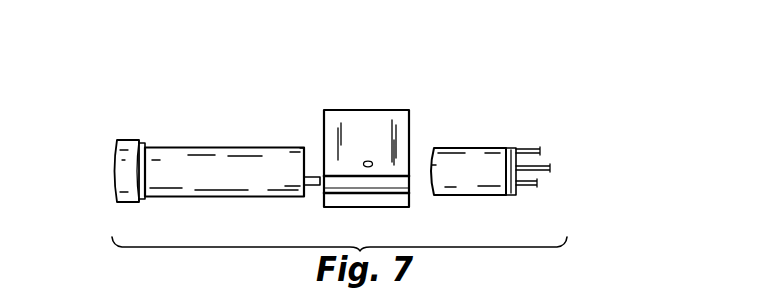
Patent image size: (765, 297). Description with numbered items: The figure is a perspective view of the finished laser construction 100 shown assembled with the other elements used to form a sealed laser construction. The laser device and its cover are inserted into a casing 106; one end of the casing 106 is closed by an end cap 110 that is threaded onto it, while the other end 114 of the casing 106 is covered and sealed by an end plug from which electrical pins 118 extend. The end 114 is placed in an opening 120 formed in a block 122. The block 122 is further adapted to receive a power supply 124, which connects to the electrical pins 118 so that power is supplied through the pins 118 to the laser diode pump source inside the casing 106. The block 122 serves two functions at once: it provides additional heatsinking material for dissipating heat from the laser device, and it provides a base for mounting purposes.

The finished laser construction 100 is at (180, 113).
The casing 106 is at (182, 177).
The end cap 110 is at (121, 171).
The other end 114 is at (307, 149).
The electrical pins 118 is at (316, 185).
The opening 120 is at (395, 124).
The block 122 is at (370, 127).
The power supply 124 is at (481, 160).